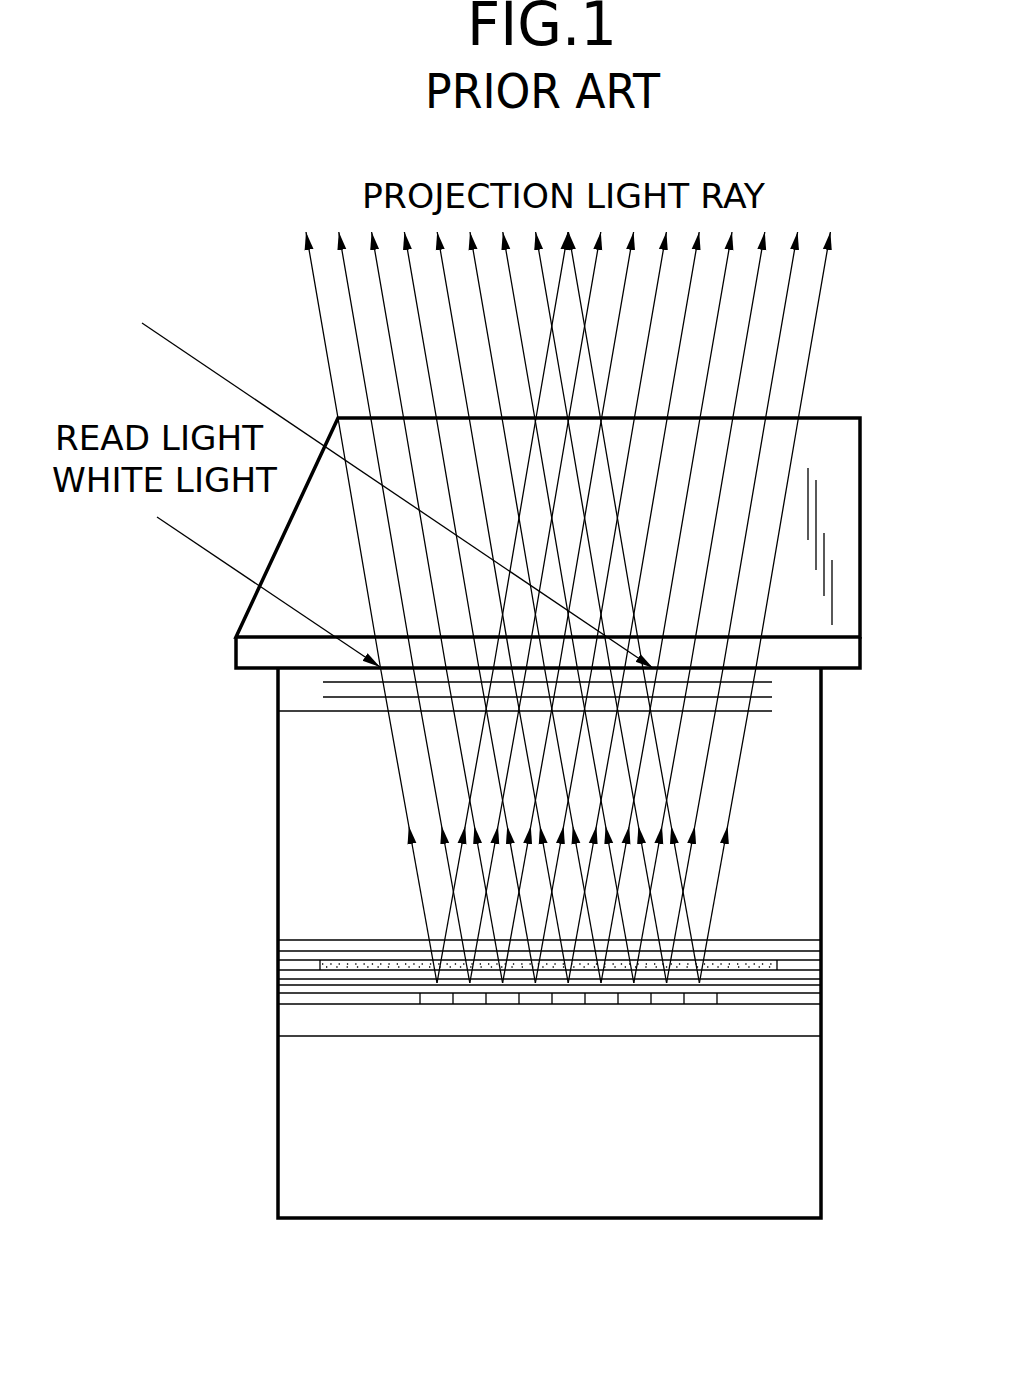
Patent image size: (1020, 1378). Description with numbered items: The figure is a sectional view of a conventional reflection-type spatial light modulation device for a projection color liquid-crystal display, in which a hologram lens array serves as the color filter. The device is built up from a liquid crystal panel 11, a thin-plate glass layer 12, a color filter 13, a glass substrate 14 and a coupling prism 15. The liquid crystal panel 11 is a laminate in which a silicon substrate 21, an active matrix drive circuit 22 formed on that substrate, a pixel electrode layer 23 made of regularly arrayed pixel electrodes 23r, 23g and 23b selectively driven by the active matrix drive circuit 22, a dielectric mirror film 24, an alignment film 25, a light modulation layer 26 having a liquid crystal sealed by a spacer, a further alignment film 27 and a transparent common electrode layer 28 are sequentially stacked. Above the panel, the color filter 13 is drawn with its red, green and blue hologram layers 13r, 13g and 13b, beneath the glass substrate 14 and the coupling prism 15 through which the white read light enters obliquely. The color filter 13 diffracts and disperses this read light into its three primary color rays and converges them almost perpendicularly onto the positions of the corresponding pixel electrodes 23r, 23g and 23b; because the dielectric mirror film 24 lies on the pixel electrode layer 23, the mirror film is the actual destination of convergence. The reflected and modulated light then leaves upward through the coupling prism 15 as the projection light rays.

The liquid crystal panel 11 is at (552, 1025).
The thin-plate glass layer 12 is at (278, 860).
The color filter 13 is at (563, 761).
The red hologram color filter layer 13r is at (772, 677).
The green hologram color filter layer 13g is at (772, 692).
The blue hologram color filter layer 13b is at (772, 710).
The glass substrate 14 is at (236, 652).
The coupling prism 15 is at (848, 419).
The silicon substrate 21 is at (821, 1110).
The active matrix drive circuit 22 is at (757, 1030).
The pixel electrode layer 23 is at (592, 1047).
The blue pixel electrode 23b is at (428, 1005).
The green pixel electrode 23g is at (475, 1005).
The red pixel electrode 23r is at (508, 1005).
The dielectric mirror film 24 is at (821, 992).
The alignment film 25 is at (821, 966).
The light modulation layer 26 is at (821, 958).
The alignment film 27 is at (821, 951).
The transparent common electrode layer 28 is at (821, 943).